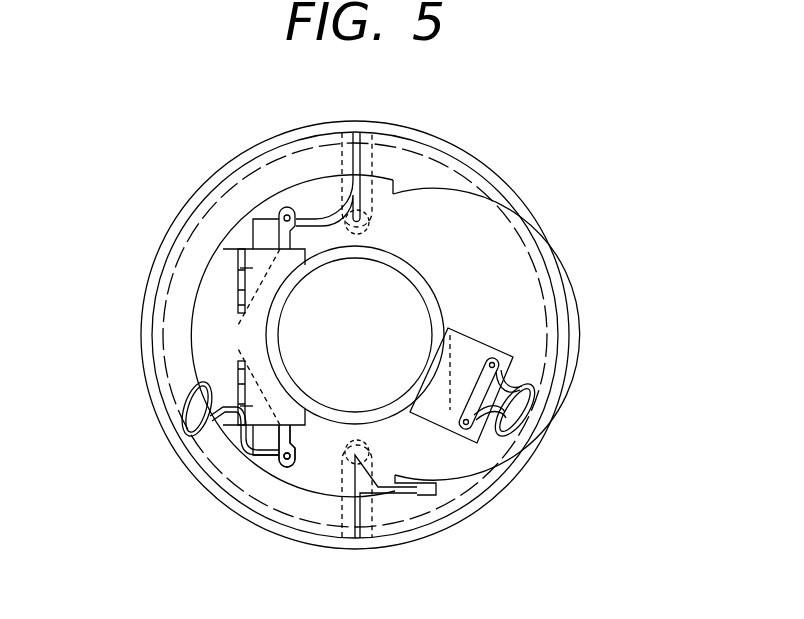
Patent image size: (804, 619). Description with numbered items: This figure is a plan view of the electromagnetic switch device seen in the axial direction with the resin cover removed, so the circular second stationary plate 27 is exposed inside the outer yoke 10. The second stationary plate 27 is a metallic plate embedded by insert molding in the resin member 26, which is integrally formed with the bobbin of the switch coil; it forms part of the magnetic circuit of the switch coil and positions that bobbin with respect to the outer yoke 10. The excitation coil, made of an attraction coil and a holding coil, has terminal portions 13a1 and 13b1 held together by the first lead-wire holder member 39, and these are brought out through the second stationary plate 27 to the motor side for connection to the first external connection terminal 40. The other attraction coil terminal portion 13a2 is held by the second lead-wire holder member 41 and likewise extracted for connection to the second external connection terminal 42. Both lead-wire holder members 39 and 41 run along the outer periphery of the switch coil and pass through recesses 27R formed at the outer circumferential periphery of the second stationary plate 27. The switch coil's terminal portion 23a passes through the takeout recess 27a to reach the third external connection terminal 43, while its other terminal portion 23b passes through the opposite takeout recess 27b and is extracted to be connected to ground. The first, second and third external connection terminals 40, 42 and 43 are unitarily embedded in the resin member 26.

The outer yoke 10 is at (198, 201).
The resin member 26 is at (413, 228).
The second stationary plate 27 is at (500, 243).
The takeout recess 27a is at (358, 162).
The lower slot 27b is at (352, 508).
The recesses 27R is at (160, 411).
The terminal portion 23a is at (312, 218).
The terminal portion 23b is at (430, 490).
The terminal portion 13a1 is at (483, 424).
The terminal portion 13a2 is at (263, 460).
The terminal portion 13b1 is at (497, 366).
The first lead-wire holder member 39 is at (548, 405).
The first external connection terminal 40 is at (520, 427).
The second lead-wire holder member 41 is at (170, 435).
The second external connection terminal 42 is at (243, 375).
The third external connection terminal 43 is at (240, 290).